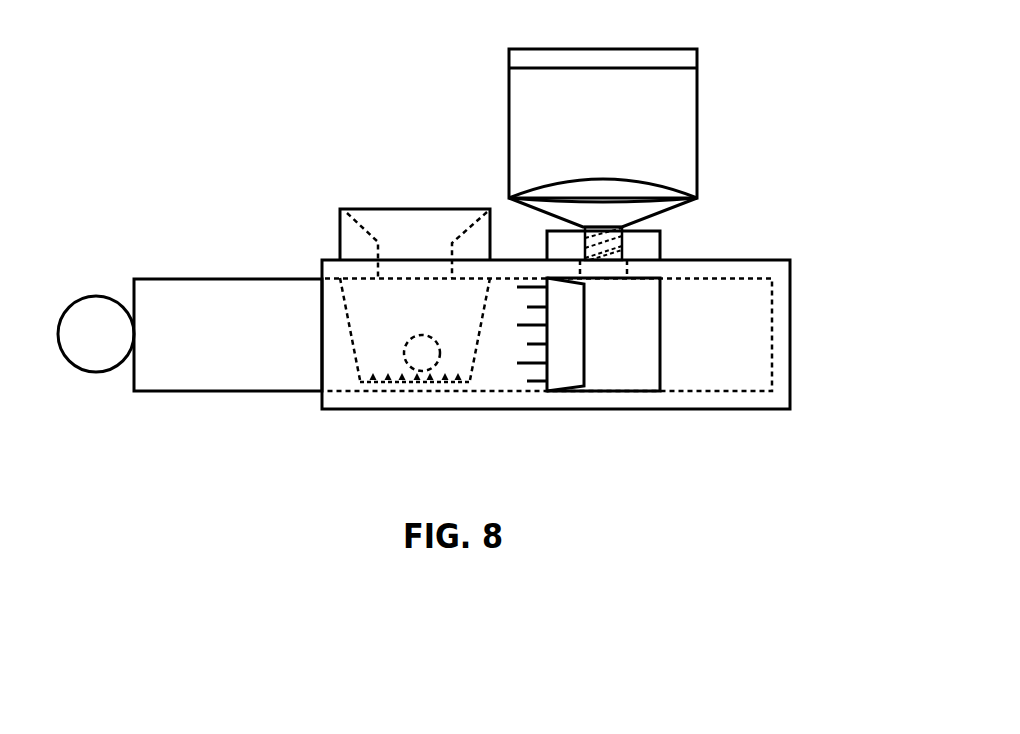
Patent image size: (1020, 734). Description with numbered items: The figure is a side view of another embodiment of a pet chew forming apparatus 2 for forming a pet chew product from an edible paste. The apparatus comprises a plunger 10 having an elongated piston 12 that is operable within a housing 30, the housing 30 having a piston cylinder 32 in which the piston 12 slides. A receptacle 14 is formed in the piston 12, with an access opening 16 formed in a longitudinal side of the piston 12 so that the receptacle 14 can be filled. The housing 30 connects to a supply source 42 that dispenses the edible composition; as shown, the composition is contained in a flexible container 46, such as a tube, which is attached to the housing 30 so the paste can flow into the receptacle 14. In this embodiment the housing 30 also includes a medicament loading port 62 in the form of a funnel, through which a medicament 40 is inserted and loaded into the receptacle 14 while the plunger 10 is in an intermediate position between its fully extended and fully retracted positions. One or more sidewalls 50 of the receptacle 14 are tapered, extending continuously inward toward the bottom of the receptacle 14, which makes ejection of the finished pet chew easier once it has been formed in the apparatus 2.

The pet chew forming apparatus 2 is at (113, 88).
The plunger 10 is at (214, 228).
The piston 12 is at (192, 393).
The receptacle 14 is at (356, 284).
The access opening 16 is at (393, 278).
The housing 30 is at (826, 222).
The piston cylinder 32 is at (710, 333).
The medicament 40 is at (427, 353).
The supply source 42 is at (490, 65).
The flexible container 46 is at (588, 132).
The sidewalls 50 is at (350, 338).
The medicament loading port 62 is at (414, 176).